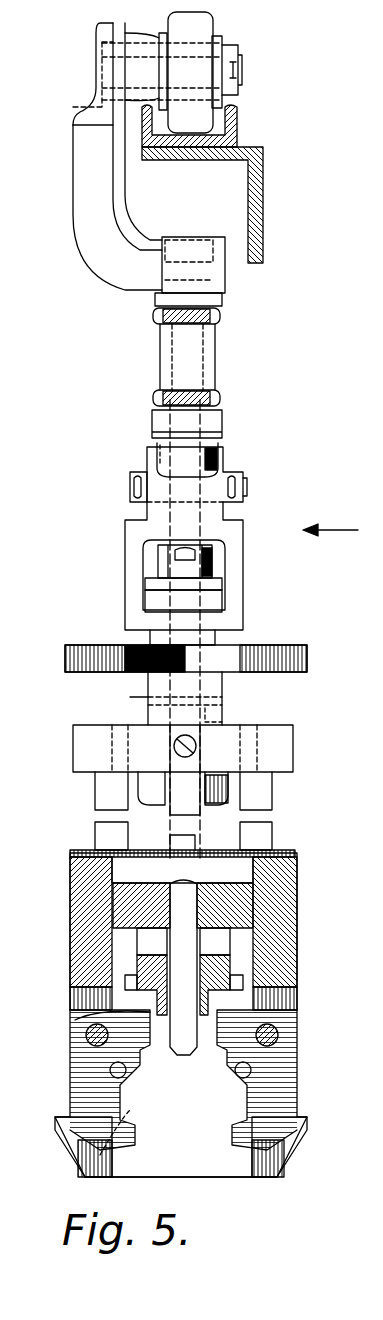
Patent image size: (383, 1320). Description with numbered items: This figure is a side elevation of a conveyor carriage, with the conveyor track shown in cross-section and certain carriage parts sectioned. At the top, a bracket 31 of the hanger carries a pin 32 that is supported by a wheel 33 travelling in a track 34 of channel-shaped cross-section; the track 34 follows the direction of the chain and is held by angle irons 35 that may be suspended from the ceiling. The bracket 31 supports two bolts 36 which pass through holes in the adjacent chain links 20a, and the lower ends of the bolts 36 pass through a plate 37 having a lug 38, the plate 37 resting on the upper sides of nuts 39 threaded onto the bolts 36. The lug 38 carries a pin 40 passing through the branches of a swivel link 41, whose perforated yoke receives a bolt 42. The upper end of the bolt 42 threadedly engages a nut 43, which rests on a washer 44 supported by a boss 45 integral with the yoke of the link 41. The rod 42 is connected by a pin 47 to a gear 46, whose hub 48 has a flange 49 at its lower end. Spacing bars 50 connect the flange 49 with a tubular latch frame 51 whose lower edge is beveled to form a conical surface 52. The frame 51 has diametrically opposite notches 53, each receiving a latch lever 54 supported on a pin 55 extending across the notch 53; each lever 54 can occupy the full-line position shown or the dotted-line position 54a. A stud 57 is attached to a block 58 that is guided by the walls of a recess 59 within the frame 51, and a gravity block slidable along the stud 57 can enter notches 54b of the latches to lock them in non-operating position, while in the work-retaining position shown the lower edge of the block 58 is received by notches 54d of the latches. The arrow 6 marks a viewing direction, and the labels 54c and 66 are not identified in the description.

The section line direction arrow 6 is at (330, 525).
The chain links 20a is at (222, 318).
The bracket 31 is at (73, 185).
The pin 32 is at (100, 70).
The wheel 33 is at (200, 40).
The track 34 is at (238, 130).
The angle irons 35 is at (263, 196).
The bolts 36 is at (210, 355).
The plate 37 is at (224, 432).
The lug 38 is at (172, 515).
The nuts 39 is at (172, 458).
The pin 40 is at (245, 490).
The swivel link 41 is at (130, 530).
The bolt 42 is at (222, 700).
The nut 43 is at (212, 570).
The washer 44 is at (160, 582).
The boss 45 is at (150, 600).
The gear 46 is at (307, 660).
The pin 47 is at (222, 712).
The hub 48 is at (148, 700).
The flange 49 is at (293, 748).
The spacing bars 50 is at (272, 835).
The latch frame 51 is at (297, 910).
The conical surface 52 is at (80, 1165).
The notches 53 is at (297, 1003).
The latch lever 54 is at (75, 1090).
The dotted-line position 54a is at (122, 1138).
The notches 54b is at (150, 1000).
The plunger shoulder 54c is at (145, 990).
The notches 54d is at (105, 1012).
The pin 55 is at (108, 1035).
The stud 57 is at (185, 893).
The block 58 is at (145, 890).
The recess 59 is at (120, 870).
The spacer block 66 is at (152, 955).